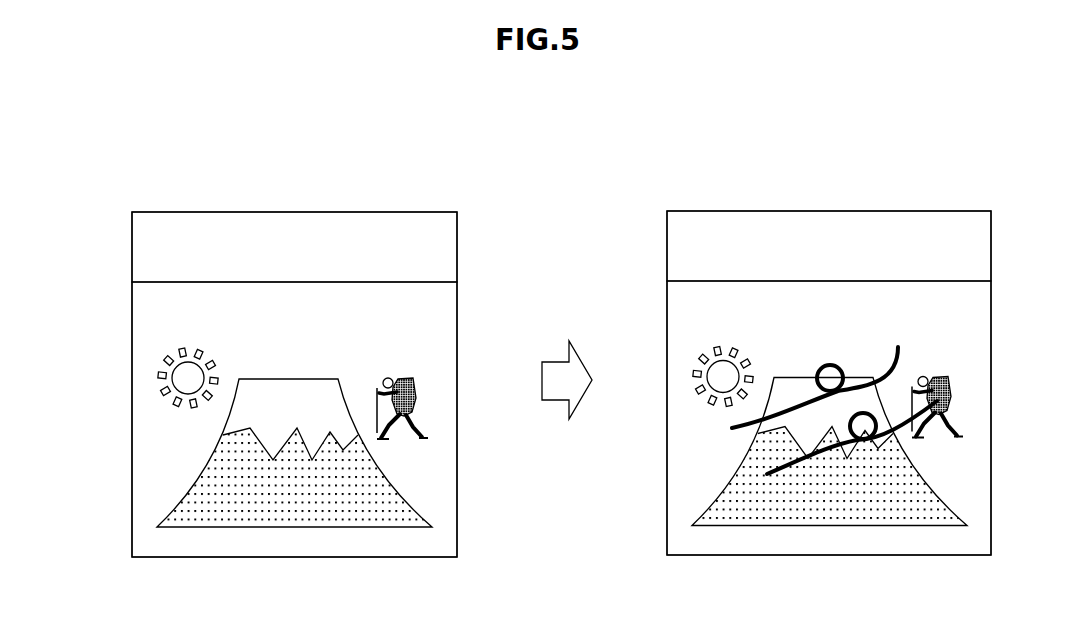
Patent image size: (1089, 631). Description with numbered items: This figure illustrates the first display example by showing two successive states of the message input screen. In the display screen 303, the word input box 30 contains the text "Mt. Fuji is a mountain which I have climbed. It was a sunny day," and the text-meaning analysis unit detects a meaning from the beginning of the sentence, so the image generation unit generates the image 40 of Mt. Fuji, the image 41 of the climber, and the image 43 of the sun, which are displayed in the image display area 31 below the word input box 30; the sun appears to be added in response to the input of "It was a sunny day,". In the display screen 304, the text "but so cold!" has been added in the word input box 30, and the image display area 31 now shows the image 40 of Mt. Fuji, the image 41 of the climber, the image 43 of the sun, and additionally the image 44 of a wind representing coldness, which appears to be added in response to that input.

The word input box 30 is at (457, 228).
The image display area 31 is at (457, 318).
The image of Mt. Fuji 40 is at (400, 492).
The image of the climber 41 is at (424, 433).
The image of the sun 43 is at (165, 365).
The image of a wind 44 is at (842, 478).
The display screen 303 is at (331, 192).
The display screen 304 is at (864, 190).